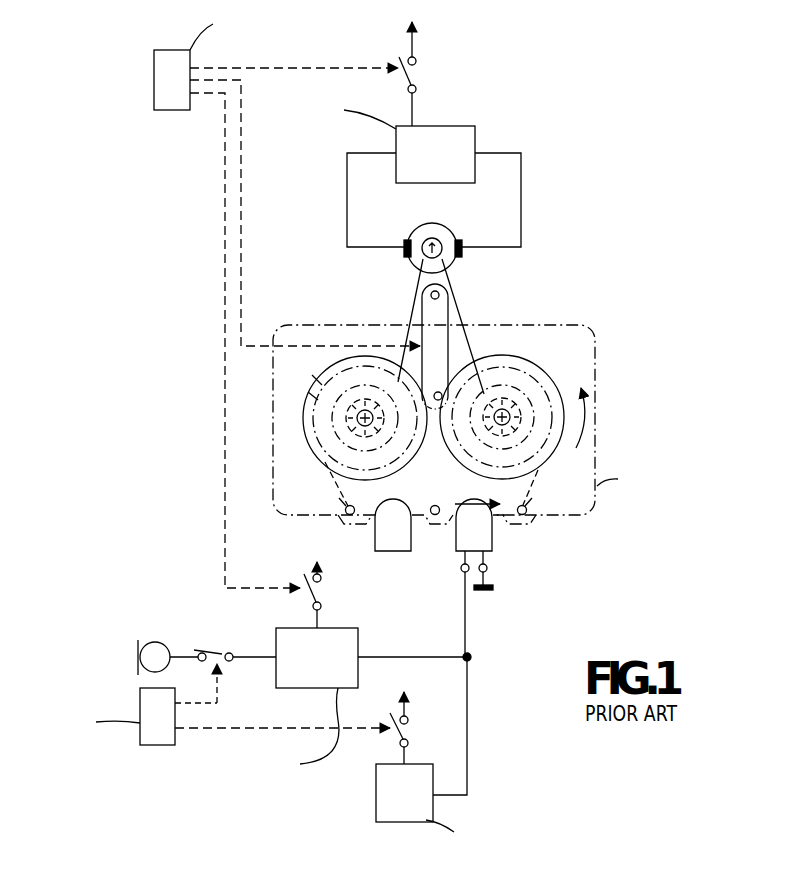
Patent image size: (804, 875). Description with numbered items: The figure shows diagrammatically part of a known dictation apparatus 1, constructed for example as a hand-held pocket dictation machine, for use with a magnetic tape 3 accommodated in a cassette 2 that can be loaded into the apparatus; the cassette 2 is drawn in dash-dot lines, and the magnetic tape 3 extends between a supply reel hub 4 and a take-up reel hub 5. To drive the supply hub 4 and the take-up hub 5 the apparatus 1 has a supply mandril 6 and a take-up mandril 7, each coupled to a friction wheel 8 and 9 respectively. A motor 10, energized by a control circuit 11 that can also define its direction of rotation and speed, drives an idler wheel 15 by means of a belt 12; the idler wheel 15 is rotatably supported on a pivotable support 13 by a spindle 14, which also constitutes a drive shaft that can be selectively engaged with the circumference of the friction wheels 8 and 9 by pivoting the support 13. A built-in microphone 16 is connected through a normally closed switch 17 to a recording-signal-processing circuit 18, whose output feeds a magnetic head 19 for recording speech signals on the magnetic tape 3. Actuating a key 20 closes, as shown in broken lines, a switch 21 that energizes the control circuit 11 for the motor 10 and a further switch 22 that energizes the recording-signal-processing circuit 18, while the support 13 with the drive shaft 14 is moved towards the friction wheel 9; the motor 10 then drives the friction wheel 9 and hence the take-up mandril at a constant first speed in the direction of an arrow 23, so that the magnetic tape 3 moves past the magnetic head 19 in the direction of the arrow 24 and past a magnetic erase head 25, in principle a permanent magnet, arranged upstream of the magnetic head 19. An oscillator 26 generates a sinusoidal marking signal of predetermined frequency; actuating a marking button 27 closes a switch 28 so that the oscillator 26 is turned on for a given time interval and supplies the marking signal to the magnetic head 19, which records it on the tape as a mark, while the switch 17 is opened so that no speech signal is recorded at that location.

The dictation apparatus 1 is at (619, 120).
The cassette 2 is at (600, 357).
The magnetic tape 3 is at (538, 478).
The supply reel hub 4 is at (317, 381).
The take-up reel hub 5 is at (518, 384).
The supply mandril 6 is at (357, 418).
The take-up mandril 7 is at (510, 424).
The friction wheel 8 is at (305, 440).
The friction wheel 9 is at (503, 355).
The motor 10 is at (441, 226).
The control circuit 11 is at (476, 126).
The belt 12 is at (414, 300).
The pivotable support 13 is at (440, 307).
The spindle 14 is at (438, 400).
The idler wheel 15 is at (456, 366).
The microphone 16 is at (156, 642).
The switch 17 is at (214, 648).
The recording-signal-processing circuit 18 is at (359, 641).
The magnetic head 19 is at (490, 545).
The key 20 is at (171, 110).
The switch 21 is at (415, 80).
The switch 22 is at (321, 598).
The arrow 23 is at (590, 434).
The arrow 24 is at (472, 500).
The magnetic erase head 25 is at (398, 542).
The oscillator 26 is at (378, 789).
The marking button 27 is at (166, 740).
The switch 28 is at (408, 730).